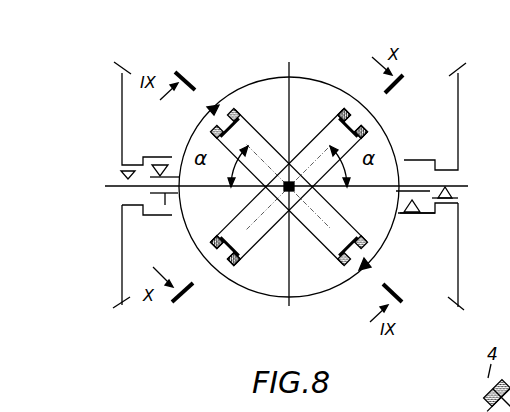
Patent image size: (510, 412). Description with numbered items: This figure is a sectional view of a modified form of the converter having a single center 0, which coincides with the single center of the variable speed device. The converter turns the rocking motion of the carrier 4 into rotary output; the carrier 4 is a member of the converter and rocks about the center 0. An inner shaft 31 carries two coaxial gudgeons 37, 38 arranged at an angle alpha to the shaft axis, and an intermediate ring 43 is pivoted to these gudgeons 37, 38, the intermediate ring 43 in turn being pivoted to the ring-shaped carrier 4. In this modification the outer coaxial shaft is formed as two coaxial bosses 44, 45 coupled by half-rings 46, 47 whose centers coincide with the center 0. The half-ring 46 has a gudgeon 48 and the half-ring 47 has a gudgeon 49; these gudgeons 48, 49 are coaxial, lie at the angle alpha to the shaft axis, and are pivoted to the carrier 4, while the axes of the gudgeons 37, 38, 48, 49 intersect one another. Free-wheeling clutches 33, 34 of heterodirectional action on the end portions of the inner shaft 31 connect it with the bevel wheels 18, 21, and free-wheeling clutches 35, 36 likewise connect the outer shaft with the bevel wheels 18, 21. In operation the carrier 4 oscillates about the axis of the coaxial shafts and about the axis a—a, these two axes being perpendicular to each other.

The center 0 is at (293, 197).
The carrier 4 is at (361, 242).
The bevel wheel 18 is at (118, 311).
The bevel wheel 21 is at (459, 109).
The inner shaft 31 is at (455, 197).
The free-wheeling clutch 33 is at (126, 181).
The free-wheeling clutch 34 is at (451, 195).
The free-wheeling clutch 35 is at (160, 164).
The free-wheeling clutch 36 is at (412, 214).
The gudgeon 37 is at (305, 155).
The gudgeon 38 is at (254, 218).
The intermediate ring 43 is at (367, 131).
The coaxial boss 44 is at (165, 206).
The coaxial boss 45 is at (407, 161).
The half-ring 46 is at (301, 78).
The half-ring 47 is at (226, 287).
The gudgeon 48 is at (220, 106).
The gudgeon 49 is at (349, 291).
The axis a— a is at (287, 189).